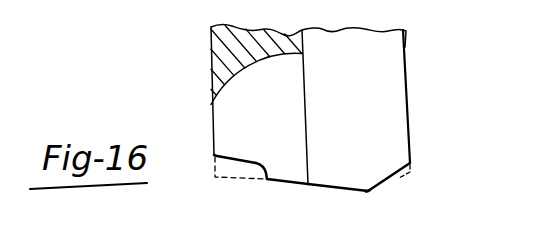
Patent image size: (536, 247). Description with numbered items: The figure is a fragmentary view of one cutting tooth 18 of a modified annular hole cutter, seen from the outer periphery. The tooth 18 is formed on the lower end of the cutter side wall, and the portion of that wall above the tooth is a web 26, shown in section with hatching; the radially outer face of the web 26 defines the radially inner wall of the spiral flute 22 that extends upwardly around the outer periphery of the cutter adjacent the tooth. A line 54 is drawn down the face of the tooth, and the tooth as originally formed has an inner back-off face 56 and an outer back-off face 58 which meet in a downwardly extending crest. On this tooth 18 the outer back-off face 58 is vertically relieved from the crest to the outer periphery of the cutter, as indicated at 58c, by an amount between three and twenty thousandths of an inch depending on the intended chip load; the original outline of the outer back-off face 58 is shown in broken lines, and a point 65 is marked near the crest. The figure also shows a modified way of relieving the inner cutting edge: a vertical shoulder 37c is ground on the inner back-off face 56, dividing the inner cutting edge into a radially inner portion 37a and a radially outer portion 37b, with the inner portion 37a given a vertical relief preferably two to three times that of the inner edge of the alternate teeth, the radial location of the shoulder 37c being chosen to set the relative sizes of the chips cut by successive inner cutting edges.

The cutting tooth of first group 18 is at (421, 95).
The spiral flute 22 is at (405, 47).
The web 26 is at (227, 47).
The transition edge 54 is at (308, 108).
The radially inner portion of inner cutting edge 37a is at (243, 153).
The radially outer portion of inner cutting edge 37b is at (288, 188).
The vertical shoulder 37c is at (268, 173).
The inner back-off face 56 is at (243, 184).
The outer back-off face 58 is at (406, 181).
The relieved outer back-off face 58c is at (387, 172).
The corner 65 is at (367, 192).